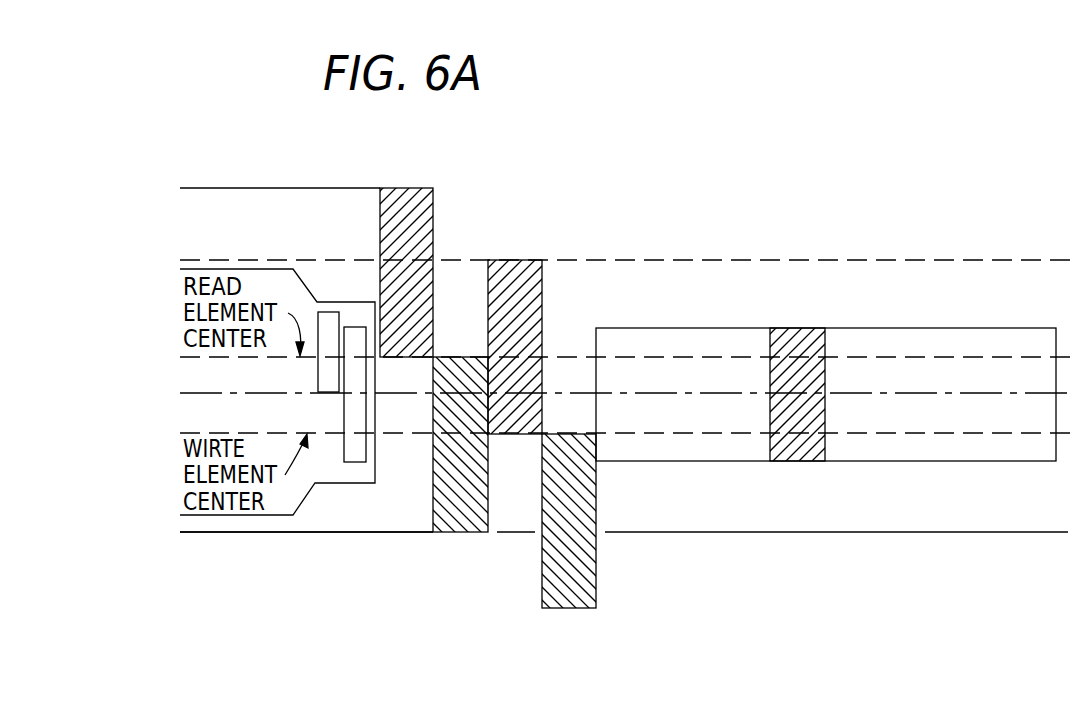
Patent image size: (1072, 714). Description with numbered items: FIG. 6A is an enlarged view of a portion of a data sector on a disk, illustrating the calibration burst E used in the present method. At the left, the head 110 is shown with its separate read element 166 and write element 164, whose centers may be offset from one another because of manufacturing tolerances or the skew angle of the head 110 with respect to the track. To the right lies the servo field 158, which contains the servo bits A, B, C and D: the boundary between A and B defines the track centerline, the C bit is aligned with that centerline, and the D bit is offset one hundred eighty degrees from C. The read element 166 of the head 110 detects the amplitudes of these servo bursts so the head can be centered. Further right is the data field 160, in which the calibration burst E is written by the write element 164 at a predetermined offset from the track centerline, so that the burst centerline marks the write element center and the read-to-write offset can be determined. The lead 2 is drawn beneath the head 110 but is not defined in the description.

The magnetic head 2 is at (260, 527).
The head assembly 110 is at (332, 483).
The write element 164 is at (353, 462).
The read element 166 is at (329, 312).
The servo burst region 158 is at (593, 180).
The data region 160 is at (1051, 180).